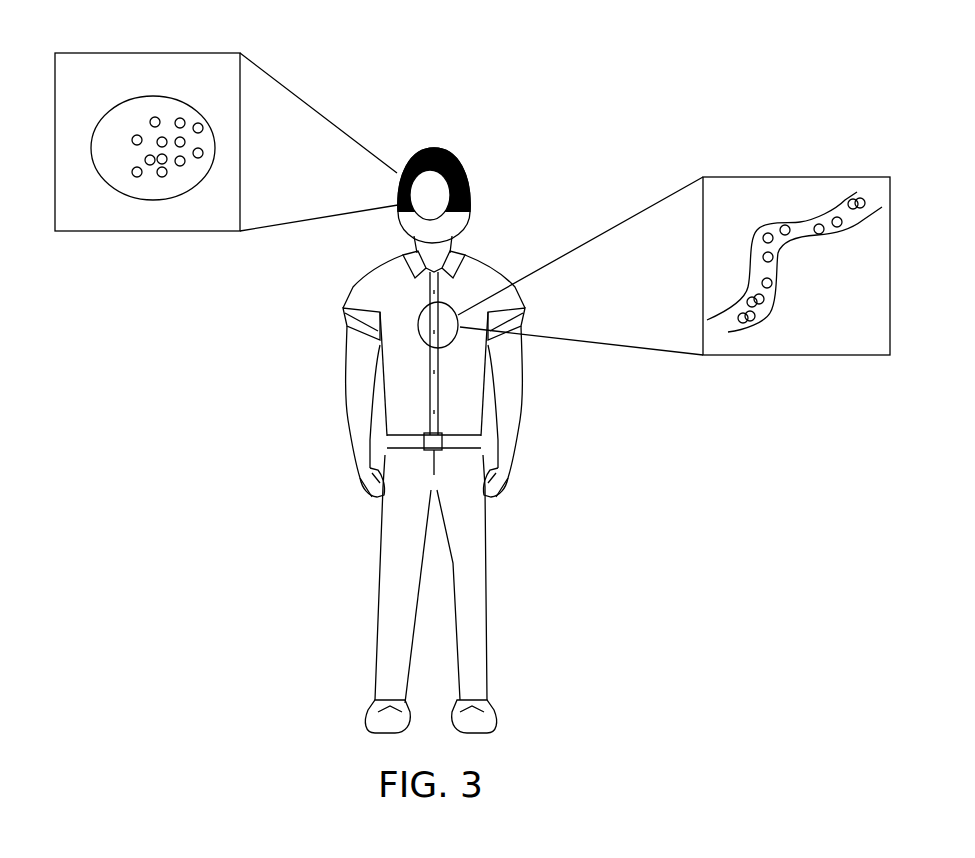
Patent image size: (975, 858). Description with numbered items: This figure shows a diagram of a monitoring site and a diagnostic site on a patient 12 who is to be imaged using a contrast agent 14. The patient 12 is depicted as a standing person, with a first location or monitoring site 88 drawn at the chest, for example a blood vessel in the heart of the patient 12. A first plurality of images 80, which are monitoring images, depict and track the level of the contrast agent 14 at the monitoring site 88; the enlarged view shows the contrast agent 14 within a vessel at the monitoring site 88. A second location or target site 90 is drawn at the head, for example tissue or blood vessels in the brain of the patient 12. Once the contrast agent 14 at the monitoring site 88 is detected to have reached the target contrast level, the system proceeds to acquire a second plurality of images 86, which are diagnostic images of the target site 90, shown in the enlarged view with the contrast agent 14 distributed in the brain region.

The patient 12 is at (375, 602).
The contrast agent 14 is at (133, 171).
The first plurality of images 80 is at (796, 177).
The second plurality of images 86 is at (147, 53).
The monitoring site 88 is at (455, 348).
The target site 90 is at (468, 157).